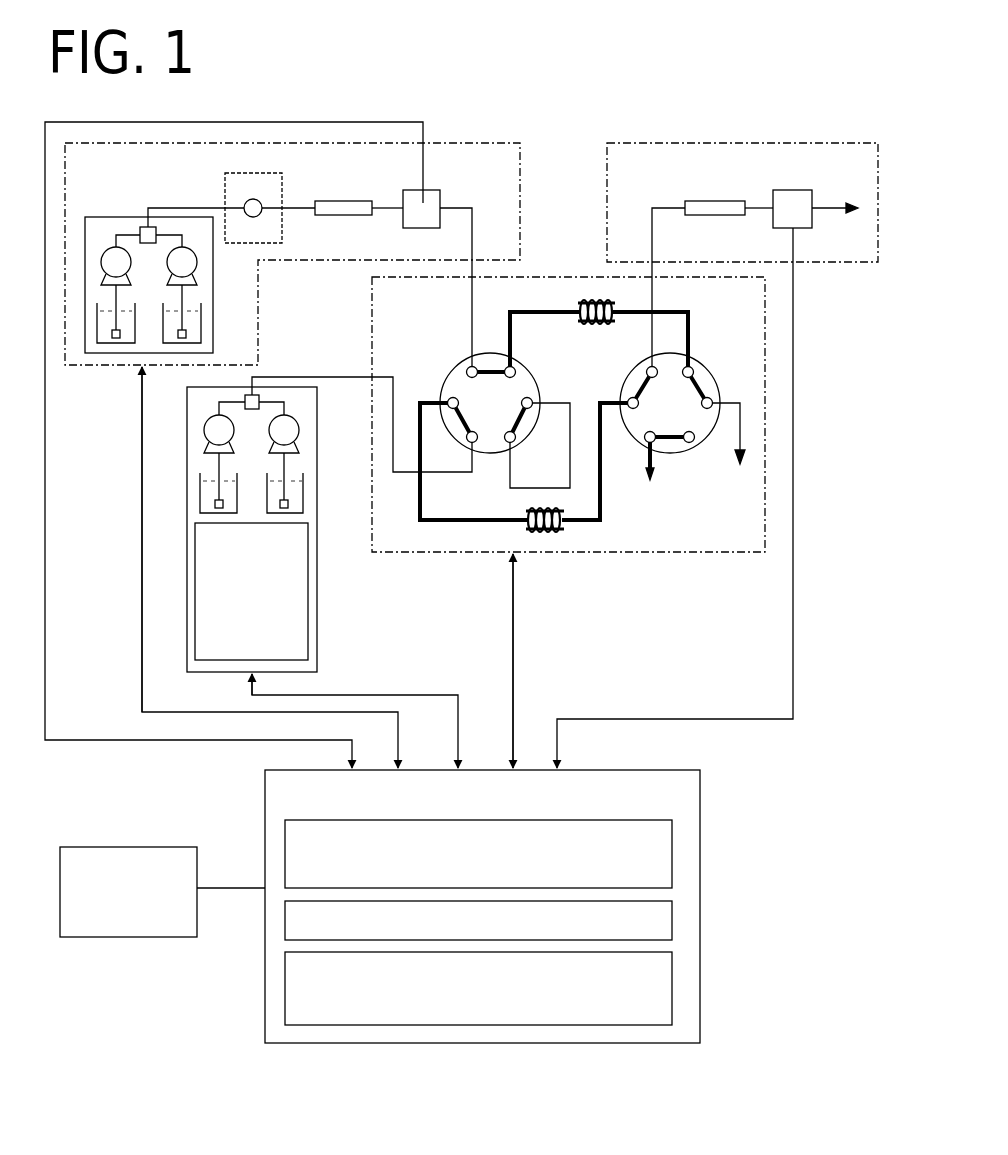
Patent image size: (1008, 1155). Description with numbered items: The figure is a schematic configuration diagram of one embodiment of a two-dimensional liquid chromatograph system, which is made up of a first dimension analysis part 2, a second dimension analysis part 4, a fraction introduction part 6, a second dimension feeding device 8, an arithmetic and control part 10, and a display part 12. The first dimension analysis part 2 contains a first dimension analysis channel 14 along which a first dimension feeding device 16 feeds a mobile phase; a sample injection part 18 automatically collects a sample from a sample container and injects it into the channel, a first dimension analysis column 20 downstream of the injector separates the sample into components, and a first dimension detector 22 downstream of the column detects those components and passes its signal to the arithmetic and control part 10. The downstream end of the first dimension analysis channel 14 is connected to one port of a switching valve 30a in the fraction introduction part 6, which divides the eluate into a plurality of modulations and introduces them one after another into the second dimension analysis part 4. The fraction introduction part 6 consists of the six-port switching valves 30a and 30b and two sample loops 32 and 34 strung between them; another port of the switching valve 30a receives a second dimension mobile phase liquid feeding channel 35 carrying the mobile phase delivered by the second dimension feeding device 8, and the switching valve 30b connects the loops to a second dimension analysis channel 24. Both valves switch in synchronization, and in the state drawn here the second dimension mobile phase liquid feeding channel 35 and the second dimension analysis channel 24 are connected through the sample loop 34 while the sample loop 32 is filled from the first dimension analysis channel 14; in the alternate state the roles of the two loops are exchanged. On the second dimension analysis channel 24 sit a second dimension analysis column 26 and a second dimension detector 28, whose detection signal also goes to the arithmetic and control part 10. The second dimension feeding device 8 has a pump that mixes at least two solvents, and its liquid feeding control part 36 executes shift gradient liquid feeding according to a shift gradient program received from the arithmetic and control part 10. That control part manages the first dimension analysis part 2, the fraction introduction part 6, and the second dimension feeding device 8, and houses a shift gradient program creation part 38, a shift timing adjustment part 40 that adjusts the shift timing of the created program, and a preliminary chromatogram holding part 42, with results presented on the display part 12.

The first dimension analysis part 2 is at (468, 143).
The second dimension analysis part 4 is at (767, 143).
The fraction introduction part 6 is at (688, 553).
The second dimension feeding device 8 is at (317, 495).
The arithmetic and control part 10 is at (702, 783).
The display part 12 is at (102, 845).
The first dimension analysis channel 14 is at (188, 205).
The first dimension feeding device 16 is at (118, 212).
The sample injection part 18 is at (282, 186).
The first dimension analysis column 20 is at (345, 202).
The first dimension detector 22 is at (440, 192).
The second dimension analysis channel 24 is at (665, 205).
The second dimension analysis column 26 is at (713, 202).
The second dimension detector 28 is at (812, 190).
The switching valve 30a is at (453, 370).
The switching valve 30b is at (675, 458).
The sample loop 32 is at (600, 326).
The sample loop 34 is at (552, 532).
The second dimension mobile phase liquid feeding channel 35 is at (335, 377).
The liquid feeding control part 36 is at (310, 552).
The shift gradient program creation part 38 is at (672, 840).
The shift timing adjustment part 40 is at (672, 920).
The preliminary chromatogram holding part 42 is at (672, 975).